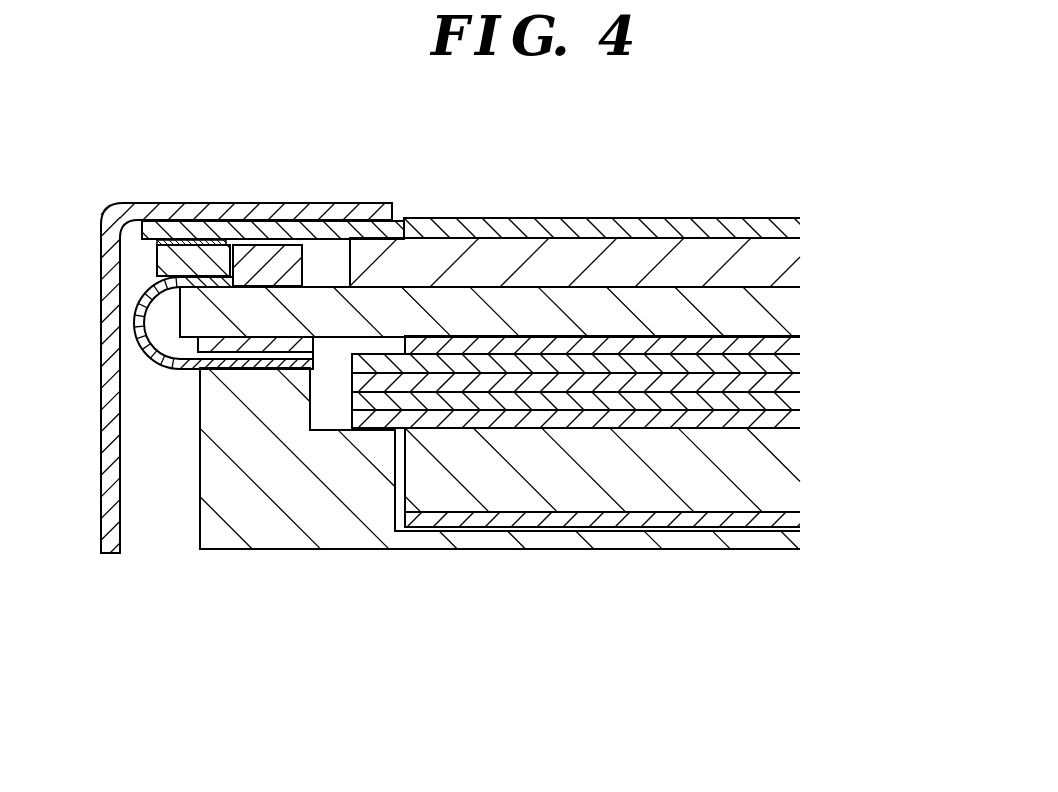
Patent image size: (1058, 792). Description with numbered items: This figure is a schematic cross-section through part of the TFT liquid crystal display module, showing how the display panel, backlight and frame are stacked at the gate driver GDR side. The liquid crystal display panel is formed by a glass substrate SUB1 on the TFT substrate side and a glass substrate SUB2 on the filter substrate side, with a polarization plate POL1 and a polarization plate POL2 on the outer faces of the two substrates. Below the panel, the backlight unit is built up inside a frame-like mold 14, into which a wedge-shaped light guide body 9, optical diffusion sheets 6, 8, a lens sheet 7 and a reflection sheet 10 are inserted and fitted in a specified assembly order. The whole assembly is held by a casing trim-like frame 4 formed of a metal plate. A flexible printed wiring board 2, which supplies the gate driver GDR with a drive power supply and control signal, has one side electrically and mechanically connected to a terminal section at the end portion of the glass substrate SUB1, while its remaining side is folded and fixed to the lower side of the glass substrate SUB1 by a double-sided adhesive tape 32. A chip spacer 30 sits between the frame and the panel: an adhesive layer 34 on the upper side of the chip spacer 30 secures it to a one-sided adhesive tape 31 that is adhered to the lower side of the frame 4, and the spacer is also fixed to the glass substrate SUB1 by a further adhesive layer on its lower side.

The flexible printed wiring board 2 is at (224, 343).
The frame 4 is at (375, 208).
The optical diffusion sheet 6 is at (798, 360).
The lens sheet 7 is at (807, 402).
The optical diffusion sheet 8 is at (803, 417).
The light guide body 9 is at (792, 465).
The reflection sheet 10 is at (803, 518).
The mold 14 is at (313, 548).
The chip spacer 30 is at (190, 260).
The one-sided adhesive tape 31 is at (315, 232).
The double-sided adhesive tape 32 is at (162, 360).
The adhesive layer 34 is at (170, 243).
The gate driver GDR is at (263, 262).
The polarization plate POL1 is at (793, 343).
The polarization plate POL2 is at (797, 225).
The glass substrate SUB1 is at (785, 305).
The glass substrate SUB2 is at (803, 253).